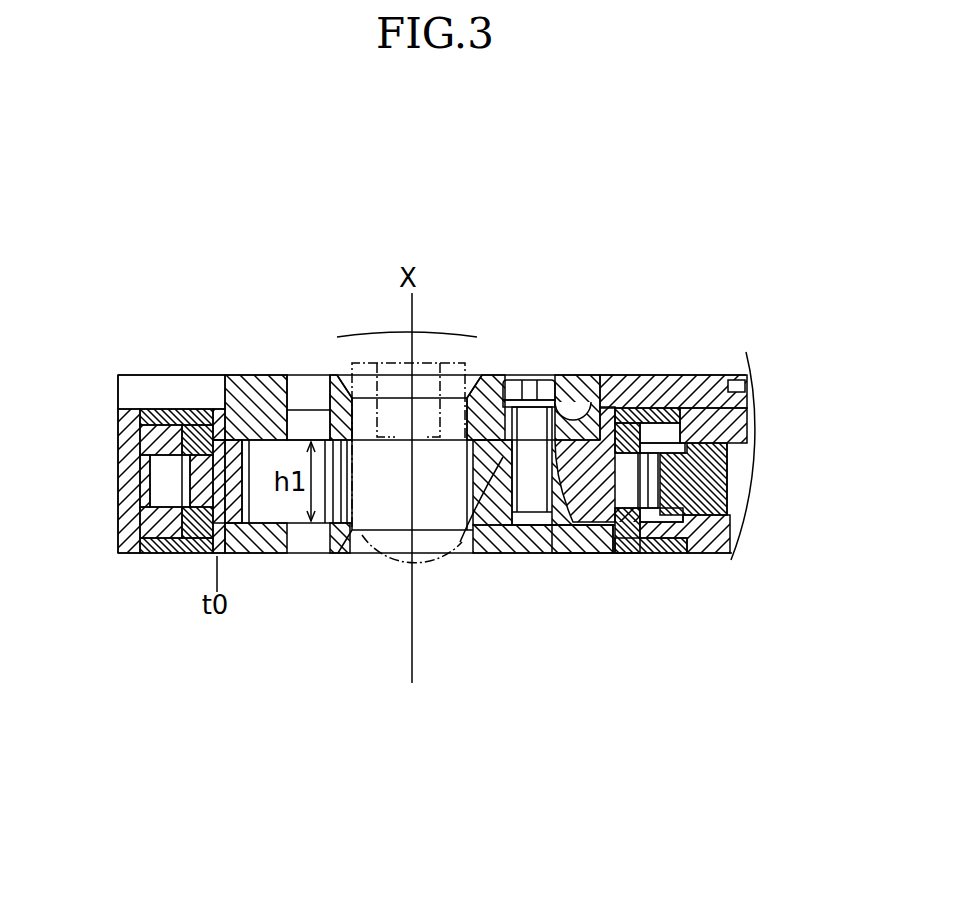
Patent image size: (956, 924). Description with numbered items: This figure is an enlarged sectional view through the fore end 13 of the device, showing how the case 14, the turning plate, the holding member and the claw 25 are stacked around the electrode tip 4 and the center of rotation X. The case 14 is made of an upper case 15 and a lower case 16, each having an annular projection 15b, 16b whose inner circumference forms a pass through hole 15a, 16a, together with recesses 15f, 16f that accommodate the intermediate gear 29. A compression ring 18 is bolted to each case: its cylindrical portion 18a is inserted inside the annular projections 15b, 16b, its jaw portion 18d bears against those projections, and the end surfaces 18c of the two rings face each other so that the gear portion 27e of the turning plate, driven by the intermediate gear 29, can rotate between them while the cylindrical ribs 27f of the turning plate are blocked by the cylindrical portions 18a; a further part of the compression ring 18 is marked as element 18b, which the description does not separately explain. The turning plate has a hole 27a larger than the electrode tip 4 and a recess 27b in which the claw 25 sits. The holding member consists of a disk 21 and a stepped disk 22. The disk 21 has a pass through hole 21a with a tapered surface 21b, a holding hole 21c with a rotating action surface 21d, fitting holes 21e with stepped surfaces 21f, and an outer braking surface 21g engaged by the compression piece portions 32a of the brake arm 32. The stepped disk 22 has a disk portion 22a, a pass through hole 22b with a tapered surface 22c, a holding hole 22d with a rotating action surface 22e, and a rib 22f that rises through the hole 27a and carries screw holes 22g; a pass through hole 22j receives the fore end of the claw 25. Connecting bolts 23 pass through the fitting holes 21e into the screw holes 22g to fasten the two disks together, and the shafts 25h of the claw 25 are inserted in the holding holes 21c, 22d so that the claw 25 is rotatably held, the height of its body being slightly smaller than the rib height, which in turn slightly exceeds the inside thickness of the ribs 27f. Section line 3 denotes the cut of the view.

The rotary shaft 3 is at (432, 348).
The electrode tip 4 is at (423, 560).
The fore end 13 is at (716, 333).
The case 14 is at (836, 412).
The upper case 15 is at (733, 424).
The pass through hole 15a is at (163, 440).
The annular projection 15b is at (146, 419).
The recess 15f is at (688, 377).
The lower case 16 is at (730, 539).
The pass through hole 16a is at (205, 488).
The annular projection 16b is at (133, 557).
The recess 16f is at (683, 557).
The compression ring 18 is at (572, 178).
The cylindrical portion 18a is at (617, 377).
The seal lip 18b is at (600, 557).
The end surface 18c is at (645, 497).
The jaw portion 18d is at (648, 377).
The disk 21 is at (263, 377).
The pass through hole 21a is at (452, 345).
The tapered surface 21b is at (338, 345).
The holding hole 21c is at (312, 377).
The rotating action surface 21d is at (297, 377).
The fitting hole 21e is at (555, 377).
The stepped surface 21f is at (583, 377).
The braking surface 21g is at (222, 395).
The disk 22 is at (507, 545).
The disk portion 22a is at (264, 557).
The pass through hole 22b is at (395, 517).
The tapered surface 22c is at (350, 557).
The holding hole 22d is at (268, 557).
The rotating action surface 22e is at (282, 557).
The rib 22f is at (462, 545).
The screw hole 22g is at (528, 557).
The pass through hole 22j is at (437, 507).
The connecting bolt 23 is at (532, 379).
The claw 25 is at (248, 557).
The shaft 25h is at (326, 375).
The hole 27a is at (575, 545).
The recess 27b is at (238, 377).
The gear portion 27e is at (190, 464).
The cylindrical rib 27f is at (200, 377).
The intermediate gear 29 is at (733, 560).
The brake arm 32 is at (726, 382).
The compression piece portion 32a is at (133, 390).